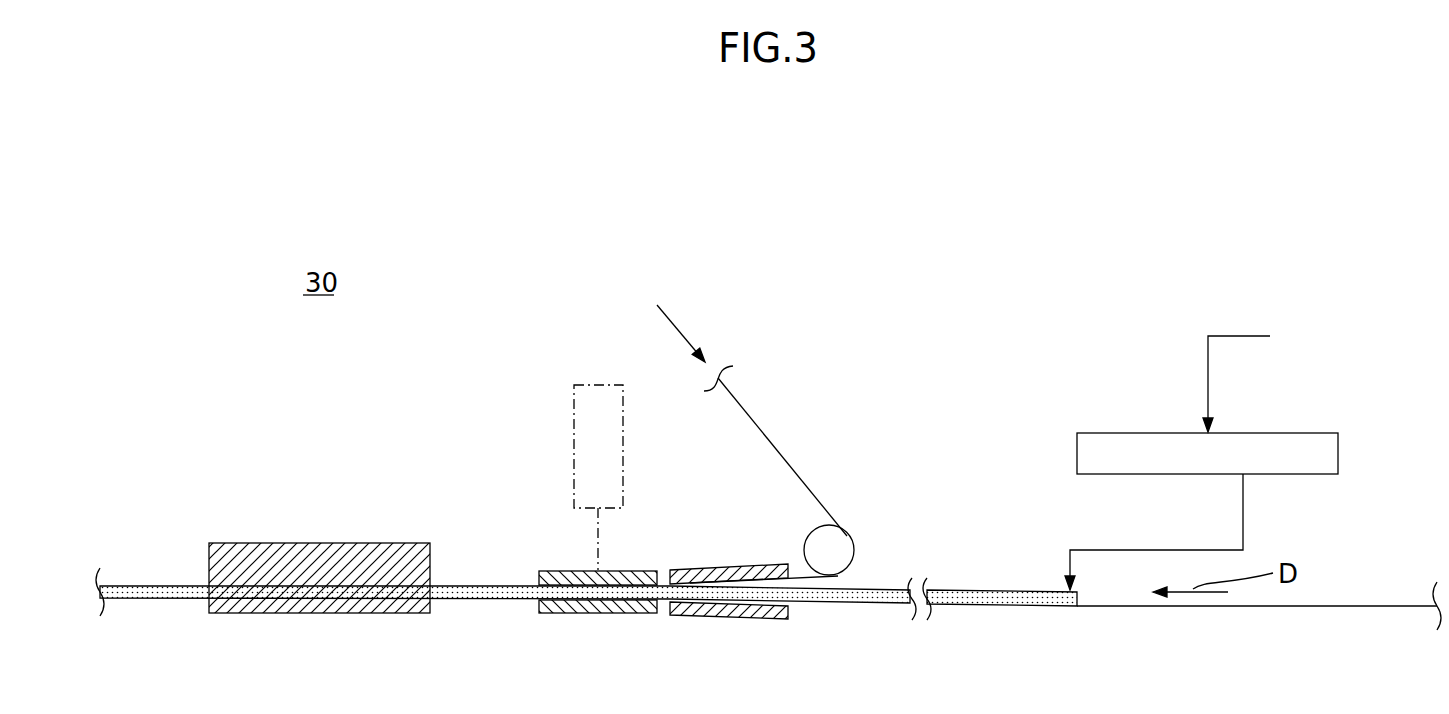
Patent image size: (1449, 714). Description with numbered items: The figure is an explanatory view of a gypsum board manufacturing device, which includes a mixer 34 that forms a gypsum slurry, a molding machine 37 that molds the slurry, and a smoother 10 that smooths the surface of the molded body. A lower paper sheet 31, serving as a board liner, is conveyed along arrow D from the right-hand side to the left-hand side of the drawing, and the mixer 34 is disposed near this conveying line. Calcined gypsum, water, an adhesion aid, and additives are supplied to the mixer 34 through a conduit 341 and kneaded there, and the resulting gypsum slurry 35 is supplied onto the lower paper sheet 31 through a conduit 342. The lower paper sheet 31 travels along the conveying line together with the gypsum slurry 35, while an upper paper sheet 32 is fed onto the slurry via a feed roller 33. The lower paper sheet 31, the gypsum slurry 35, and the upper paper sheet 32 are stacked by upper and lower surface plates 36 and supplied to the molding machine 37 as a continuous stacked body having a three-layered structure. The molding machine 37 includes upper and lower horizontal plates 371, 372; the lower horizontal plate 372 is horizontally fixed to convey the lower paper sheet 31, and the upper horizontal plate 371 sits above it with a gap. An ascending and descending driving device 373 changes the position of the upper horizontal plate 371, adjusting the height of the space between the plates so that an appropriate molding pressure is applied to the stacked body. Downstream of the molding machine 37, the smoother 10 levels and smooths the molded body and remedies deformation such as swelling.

The smoother 10 is at (320, 598).
The lower paper sheet 31 is at (1253, 612).
The upper paper sheet 32 is at (780, 452).
The feed roller 33 is at (823, 543).
The mixer 34 is at (1310, 433).
The conduit 341 is at (1208, 383).
The conduit 342 is at (1243, 510).
The gypsum slurry 35 is at (980, 590).
The upper and lower surface plates 36 is at (728, 636).
The molding machine 37 is at (554, 592).
The upper horizontal plate 371 is at (550, 570).
The lower horizontal plate 372 is at (598, 613).
The ascending and descending driving device 373 is at (593, 418).